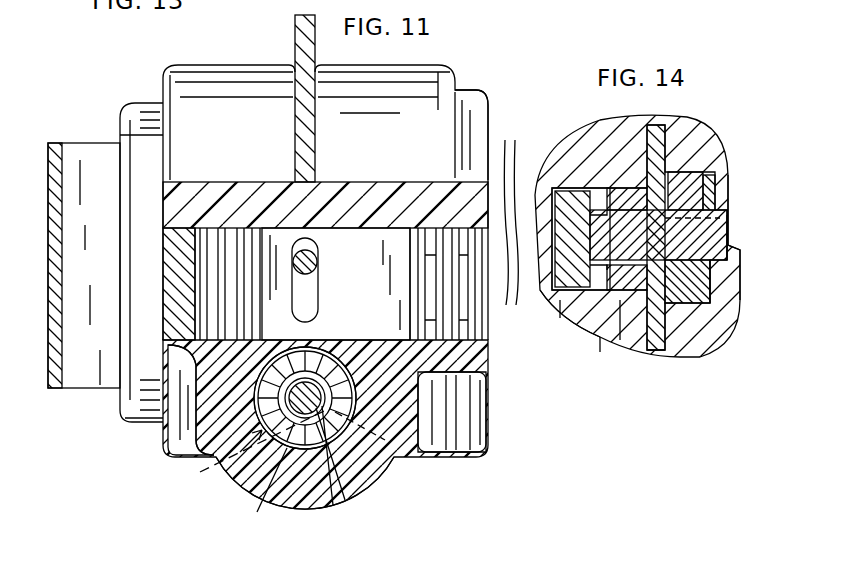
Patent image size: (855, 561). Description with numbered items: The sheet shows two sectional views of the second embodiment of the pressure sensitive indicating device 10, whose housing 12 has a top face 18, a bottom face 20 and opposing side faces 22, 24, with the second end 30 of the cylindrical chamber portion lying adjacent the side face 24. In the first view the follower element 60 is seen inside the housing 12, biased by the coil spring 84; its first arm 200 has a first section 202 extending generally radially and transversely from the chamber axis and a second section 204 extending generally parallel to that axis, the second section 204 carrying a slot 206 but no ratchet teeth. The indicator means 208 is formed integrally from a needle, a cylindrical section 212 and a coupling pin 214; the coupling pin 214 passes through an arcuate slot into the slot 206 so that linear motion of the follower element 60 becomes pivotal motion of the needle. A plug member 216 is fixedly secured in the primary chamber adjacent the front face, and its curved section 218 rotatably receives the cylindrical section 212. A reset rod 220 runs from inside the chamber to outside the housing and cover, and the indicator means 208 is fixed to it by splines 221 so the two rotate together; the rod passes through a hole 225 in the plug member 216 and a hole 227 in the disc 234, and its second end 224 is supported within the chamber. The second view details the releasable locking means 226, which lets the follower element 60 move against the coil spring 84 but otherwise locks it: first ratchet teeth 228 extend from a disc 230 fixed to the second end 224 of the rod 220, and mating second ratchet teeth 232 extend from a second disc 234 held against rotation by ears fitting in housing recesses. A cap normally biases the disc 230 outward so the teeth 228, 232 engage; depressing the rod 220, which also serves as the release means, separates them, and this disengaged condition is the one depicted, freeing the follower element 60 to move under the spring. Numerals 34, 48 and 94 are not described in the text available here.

In FIG. 11, the pressure sensitive indicating device 10 is at (113, 90).
In FIG. 11, the housing 12 is at (461, 79).
In FIG. 14, the housing 12 is at (600, 352).
In FIG. 11, the top face 18 is at (232, 66).
In FIG. 11, the bottom face 20 is at (188, 455).
In FIG. 11, the side face 22 is at (160, 127).
In FIG. 11, the side face 24 is at (520, 365).
In FIG. 11, the second end 30 is at (480, 320).
In FIG. 11, the stem 34 is at (228, 240).
In FIG. 11, the collar flange 48 is at (130, 425).
In FIG. 11, the follower element 60 is at (368, 243).
In FIG. 11, the coil spring 84 is at (416, 265).
In FIG. 11, the tube 94 is at (54, 392).
In FIG. 11, the first arm 200 is at (340, 235).
In FIG. 11, the first section 202 is at (282, 235).
In FIG. 11, the second section 204 is at (395, 235).
In FIG. 11, the slot 206 is at (312, 316).
In FIG. 14, the indicator means 208 is at (695, 162).
In FIG. 14, the cylindrical section 212 is at (702, 304).
In FIG. 11, the coupling pin 214 is at (315, 275).
In FIG. 14, the plug member 216 is at (656, 352).
In FIG. 14, the curved section 218 is at (682, 304).
In FIG. 11, the reset rod 220 is at (330, 400).
In FIG. 14, the reset rod 220 is at (736, 272).
In FIG. 14, the splines 221 is at (730, 215).
In FIG. 11, the second end 224 is at (340, 448).
In FIG. 14, the second end 224 is at (578, 330).
In FIG. 14, the hole 225 is at (667, 212).
In FIG. 11, the releasable locking means 226 is at (222, 466).
In FIG. 14, the releasable locking means 226 is at (580, 185).
In FIG. 14, the hole 227 is at (625, 340).
In FIG. 11, the first ratchet teeth 228 is at (336, 503).
In FIG. 14, the first ratchet teeth 228 is at (597, 195).
In FIG. 11, the disc 230 is at (302, 468).
In FIG. 14, the disc 230 is at (566, 190).
In FIG. 14, the second ratchet teeth 232 is at (590, 335).
In FIG. 14, the disc 234 is at (655, 195).